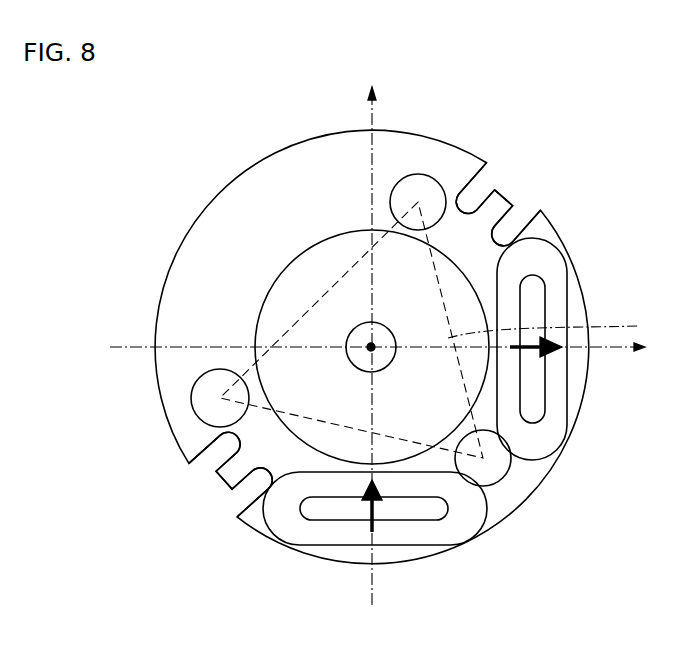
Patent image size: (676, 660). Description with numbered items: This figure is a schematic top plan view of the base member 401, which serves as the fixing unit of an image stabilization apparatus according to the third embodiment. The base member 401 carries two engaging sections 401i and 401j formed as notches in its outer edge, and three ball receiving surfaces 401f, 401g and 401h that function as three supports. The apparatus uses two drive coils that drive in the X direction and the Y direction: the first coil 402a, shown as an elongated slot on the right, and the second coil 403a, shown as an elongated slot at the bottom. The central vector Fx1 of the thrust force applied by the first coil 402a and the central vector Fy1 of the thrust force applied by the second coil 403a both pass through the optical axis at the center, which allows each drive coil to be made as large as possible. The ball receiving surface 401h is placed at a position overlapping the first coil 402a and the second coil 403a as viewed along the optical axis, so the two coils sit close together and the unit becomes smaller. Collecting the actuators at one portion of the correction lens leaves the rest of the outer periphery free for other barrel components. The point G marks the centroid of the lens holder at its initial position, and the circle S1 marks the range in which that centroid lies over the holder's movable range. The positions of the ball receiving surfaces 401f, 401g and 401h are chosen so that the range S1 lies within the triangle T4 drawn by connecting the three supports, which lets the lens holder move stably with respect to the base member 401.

The base member 401 is at (325, 132).
The ball receiving surface 401f is at (418, 202).
The ball receiving surface 401g is at (192, 402).
The ball receiving surface 401h is at (505, 480).
The engaging section 401i is at (505, 198).
The engaging section 401j is at (220, 478).
The first coil 402a is at (558, 313).
The second coil 403a is at (318, 538).
The centroid G is at (380, 342).
The range of centroid position S1 is at (393, 364).
The triangle T4 is at (556, 325).
The central vector of thrust force of first coil Fx1 is at (544, 359).
The central vector of thrust force of second coil Fy1 is at (389, 504).
The X direction X is at (386, 347).
The Y direction Y is at (370, 333).